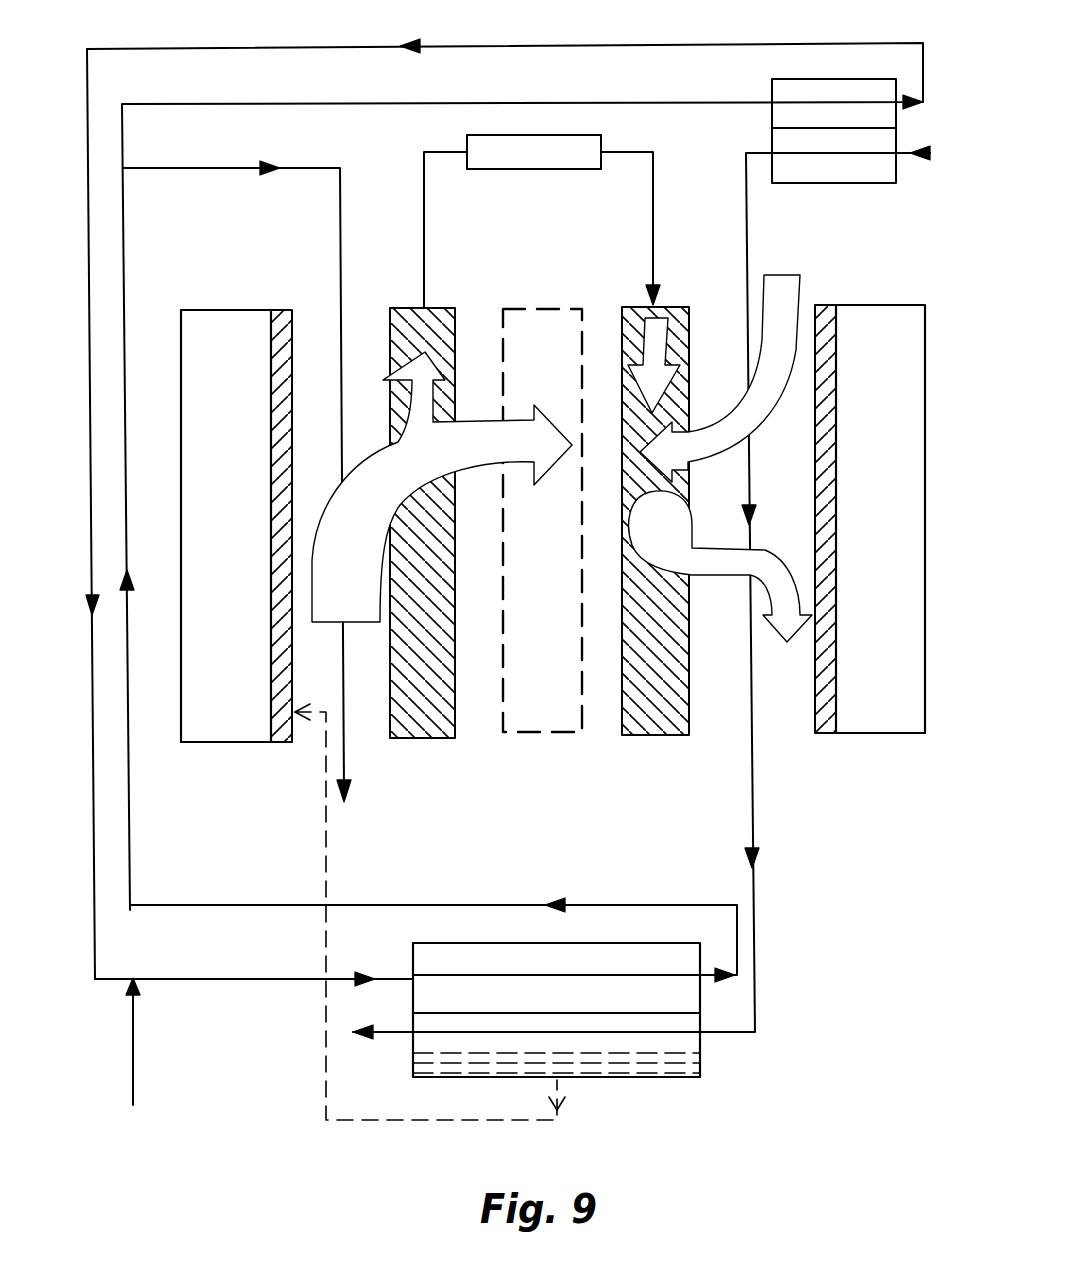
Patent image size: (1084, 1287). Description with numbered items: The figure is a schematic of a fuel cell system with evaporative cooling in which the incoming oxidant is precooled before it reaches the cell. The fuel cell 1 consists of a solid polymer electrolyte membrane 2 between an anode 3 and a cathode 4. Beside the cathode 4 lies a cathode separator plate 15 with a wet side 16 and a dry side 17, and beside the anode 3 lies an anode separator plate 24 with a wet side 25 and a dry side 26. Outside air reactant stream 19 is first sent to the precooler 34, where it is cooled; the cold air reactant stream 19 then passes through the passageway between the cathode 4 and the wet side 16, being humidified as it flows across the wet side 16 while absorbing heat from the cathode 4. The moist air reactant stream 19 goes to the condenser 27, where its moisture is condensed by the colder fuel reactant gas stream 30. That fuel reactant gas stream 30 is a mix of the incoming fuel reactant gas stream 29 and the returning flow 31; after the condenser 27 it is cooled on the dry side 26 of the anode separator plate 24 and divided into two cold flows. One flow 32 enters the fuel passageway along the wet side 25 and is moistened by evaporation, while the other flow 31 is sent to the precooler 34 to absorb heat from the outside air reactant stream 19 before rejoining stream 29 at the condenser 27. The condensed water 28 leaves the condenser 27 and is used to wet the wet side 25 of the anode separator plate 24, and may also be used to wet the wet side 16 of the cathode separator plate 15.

The fuel cell 1 is at (565, 460).
The solid polymer electrolyte membrane 2 is at (503, 672).
The anode 3 is at (394, 630).
The cathode 4 is at (623, 675).
The cathode separator plate 15 is at (878, 735).
The wet side of cathode separator plate 16 is at (818, 700).
The dry side of cathode separator plate 17 is at (925, 335).
The air reactant stream (oxidant) 19 is at (914, 160).
The anode separator plate 24 is at (231, 310).
The wet side of anode separator plate 25 is at (291, 620).
The dry side of anode separator plate 26 is at (183, 700).
The condenser 27 is at (685, 1085).
The condensed water 28 is at (562, 1082).
The incoming fuel reactant gas stream (hydrogen) 29 is at (133, 1063).
The fuel reactant gas stream (hydrogen) 30 is at (365, 902).
The fuel gas flow to precooler 31 is at (205, 48).
The fuel gas flow to wet side of anode separator plate 32 is at (166, 170).
The precooler 34 is at (896, 112).